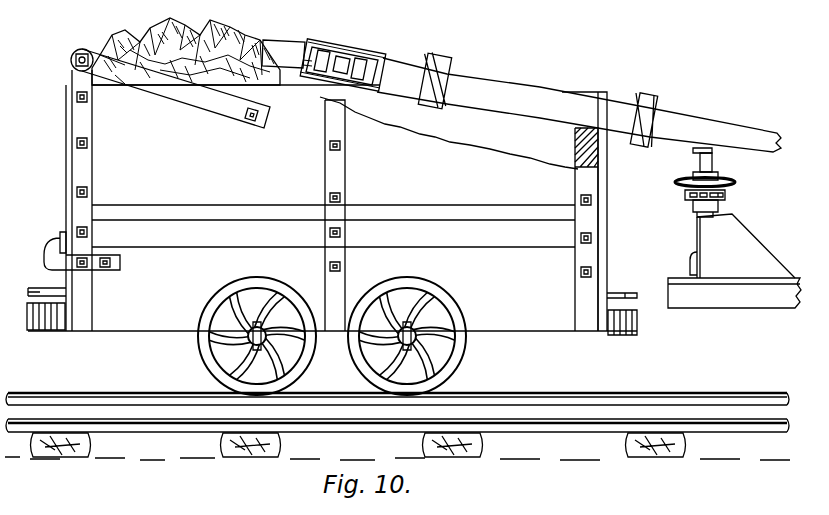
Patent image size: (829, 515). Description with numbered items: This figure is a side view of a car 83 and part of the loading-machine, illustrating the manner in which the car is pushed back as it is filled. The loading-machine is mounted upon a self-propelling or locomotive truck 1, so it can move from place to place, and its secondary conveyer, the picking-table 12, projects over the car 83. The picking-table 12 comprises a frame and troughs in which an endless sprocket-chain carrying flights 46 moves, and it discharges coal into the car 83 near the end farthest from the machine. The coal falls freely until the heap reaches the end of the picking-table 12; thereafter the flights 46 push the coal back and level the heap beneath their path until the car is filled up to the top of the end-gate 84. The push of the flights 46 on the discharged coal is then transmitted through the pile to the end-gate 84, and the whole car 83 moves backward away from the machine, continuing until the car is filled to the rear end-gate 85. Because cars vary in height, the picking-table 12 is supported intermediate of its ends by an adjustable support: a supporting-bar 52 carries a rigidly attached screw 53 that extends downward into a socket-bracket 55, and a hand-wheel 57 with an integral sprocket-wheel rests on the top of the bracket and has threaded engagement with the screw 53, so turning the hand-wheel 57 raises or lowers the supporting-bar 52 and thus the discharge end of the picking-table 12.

The truck 1 is at (770, 300).
The picking-table 12 is at (688, 126).
The flights 46 is at (284, 46).
The supporting-bar 52 is at (714, 157).
The screw 53 is at (700, 165).
The socket-bracket 55 is at (742, 246).
The hand-wheel 57 is at (679, 186).
The car 83 is at (332, 206).
The end-gate 84 is at (150, 190).
The rear end-gate 85 is at (598, 158).